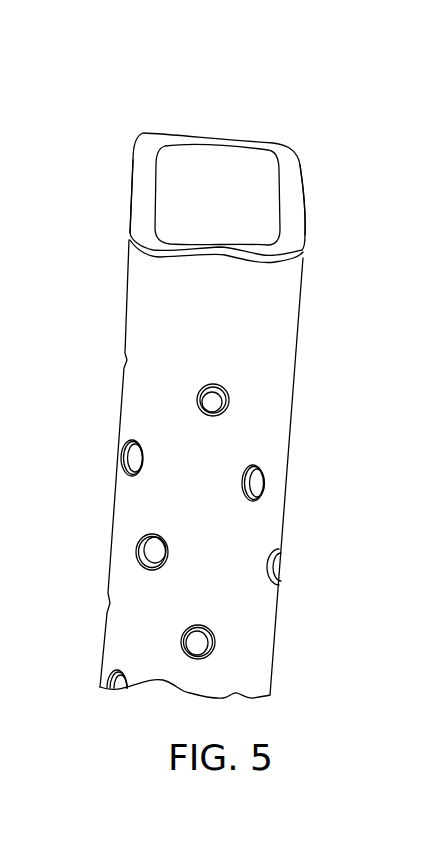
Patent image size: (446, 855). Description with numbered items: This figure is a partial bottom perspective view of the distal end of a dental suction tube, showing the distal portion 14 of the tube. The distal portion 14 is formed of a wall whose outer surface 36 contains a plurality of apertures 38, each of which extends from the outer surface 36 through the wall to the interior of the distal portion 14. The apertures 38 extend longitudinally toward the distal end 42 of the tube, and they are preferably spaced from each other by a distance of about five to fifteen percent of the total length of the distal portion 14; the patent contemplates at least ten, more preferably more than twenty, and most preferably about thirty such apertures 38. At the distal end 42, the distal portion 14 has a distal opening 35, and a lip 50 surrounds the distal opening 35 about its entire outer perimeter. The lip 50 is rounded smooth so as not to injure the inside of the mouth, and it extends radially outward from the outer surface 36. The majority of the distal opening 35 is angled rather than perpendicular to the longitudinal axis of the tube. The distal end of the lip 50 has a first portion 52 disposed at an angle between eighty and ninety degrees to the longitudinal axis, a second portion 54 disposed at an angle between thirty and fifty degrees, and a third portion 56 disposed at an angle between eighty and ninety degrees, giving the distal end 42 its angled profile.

The distal end 42 is at (157, 96).
The first portion 52 is at (273, 152).
The distal opening 35 is at (225, 198).
The second portion 54 is at (292, 202).
The third portion 56 is at (150, 233).
The lip 50 is at (148, 248).
The outer surface 36 is at (163, 283).
The distal portion 14 is at (238, 326).
The apertures 38 is at (217, 403).